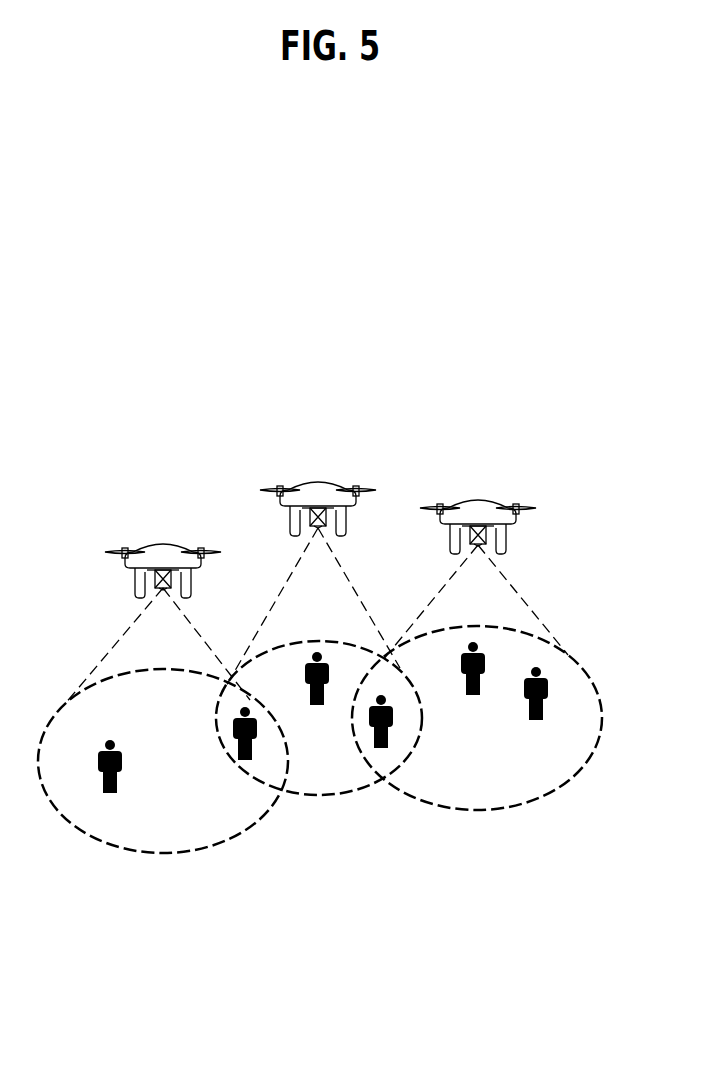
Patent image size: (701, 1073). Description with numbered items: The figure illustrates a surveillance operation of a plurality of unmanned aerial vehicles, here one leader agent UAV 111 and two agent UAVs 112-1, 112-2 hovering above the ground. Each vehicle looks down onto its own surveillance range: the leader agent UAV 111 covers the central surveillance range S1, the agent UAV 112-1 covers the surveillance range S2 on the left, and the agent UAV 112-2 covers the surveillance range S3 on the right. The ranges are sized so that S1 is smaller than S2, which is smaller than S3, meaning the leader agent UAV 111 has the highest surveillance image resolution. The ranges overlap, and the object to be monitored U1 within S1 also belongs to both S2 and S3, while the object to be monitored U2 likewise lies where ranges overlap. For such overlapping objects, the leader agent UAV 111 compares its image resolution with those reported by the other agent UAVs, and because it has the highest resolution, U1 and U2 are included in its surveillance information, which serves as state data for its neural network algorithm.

The leader agent UAV 111 is at (318, 488).
The agent UAV 112-1 is at (163, 548).
The agent UAV 112-2 is at (478, 506).
The surveillance range S1 is at (318, 796).
The surveillance range S2 is at (163, 853).
The surveillance range S3 is at (478, 810).
The object to be monitored U1 is at (244, 760).
The object to be monitored U2 is at (381, 750).